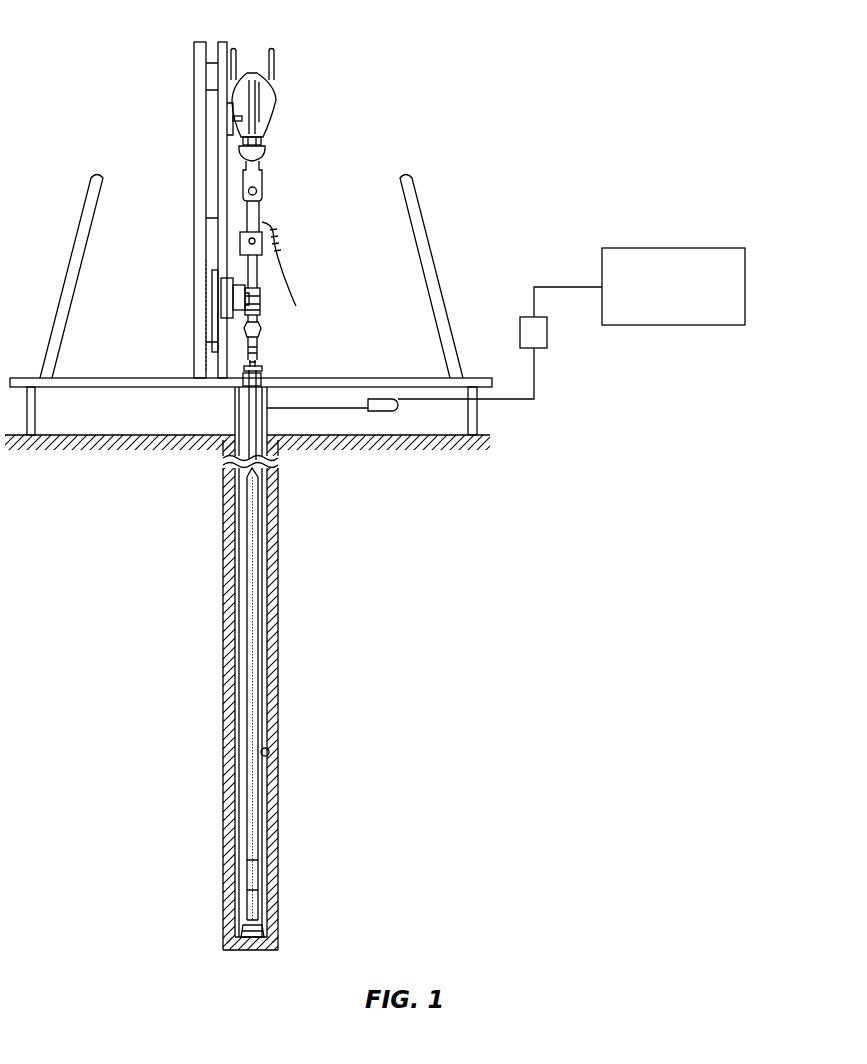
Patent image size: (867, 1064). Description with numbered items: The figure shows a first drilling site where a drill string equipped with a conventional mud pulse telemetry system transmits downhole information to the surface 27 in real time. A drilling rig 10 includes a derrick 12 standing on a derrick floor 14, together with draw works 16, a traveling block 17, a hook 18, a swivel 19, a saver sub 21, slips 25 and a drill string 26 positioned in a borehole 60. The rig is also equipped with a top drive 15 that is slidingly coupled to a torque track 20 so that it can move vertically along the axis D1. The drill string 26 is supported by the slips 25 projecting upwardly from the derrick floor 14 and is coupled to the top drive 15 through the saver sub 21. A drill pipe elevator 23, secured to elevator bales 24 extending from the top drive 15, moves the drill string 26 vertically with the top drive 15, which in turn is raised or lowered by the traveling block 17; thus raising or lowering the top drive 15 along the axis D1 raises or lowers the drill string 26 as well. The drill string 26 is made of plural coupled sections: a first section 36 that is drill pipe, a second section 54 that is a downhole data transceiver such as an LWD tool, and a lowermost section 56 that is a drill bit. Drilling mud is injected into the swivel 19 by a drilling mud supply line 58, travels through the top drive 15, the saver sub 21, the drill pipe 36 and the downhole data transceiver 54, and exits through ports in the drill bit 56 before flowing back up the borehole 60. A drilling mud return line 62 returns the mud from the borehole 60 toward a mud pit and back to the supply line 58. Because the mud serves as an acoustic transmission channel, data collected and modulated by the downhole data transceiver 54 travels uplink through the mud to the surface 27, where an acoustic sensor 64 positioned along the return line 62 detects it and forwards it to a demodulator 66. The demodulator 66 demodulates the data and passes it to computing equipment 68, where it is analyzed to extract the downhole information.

The drilling rig 10 is at (512, 110).
The axis D1 is at (223, 0).
The derrick 12 is at (432, 240).
The derrick floor 14 is at (418, 378).
The top drive 15 is at (262, 299).
The draw works 16 is at (275, 62).
The traveling block 17 is at (277, 97).
The hook 18 is at (262, 141).
The swivel 19 is at (263, 190).
The torque track 20 is at (266, 151).
The saver sub 21 is at (256, 351).
The drill pipe elevator 23 is at (263, 368).
The elevator bales 24 is at (256, 362).
The slips 25 is at (243, 381).
The drill string 26 is at (218, 683).
The surface 27 is at (140, 475).
The first section (drill pipe) 36 is at (259, 603).
The second section (downhole data transceiver) 54 is at (259, 880).
The third section (drill bit) 56 is at (240, 932).
The drilling mud supply line 58 is at (283, 252).
The borehole 60 is at (269, 752).
The drilling mud return line 62 is at (314, 412).
The acoustic sensor 64 is at (376, 412).
The demodulator 66 is at (547, 337).
The computing equipment 68 is at (672, 248).